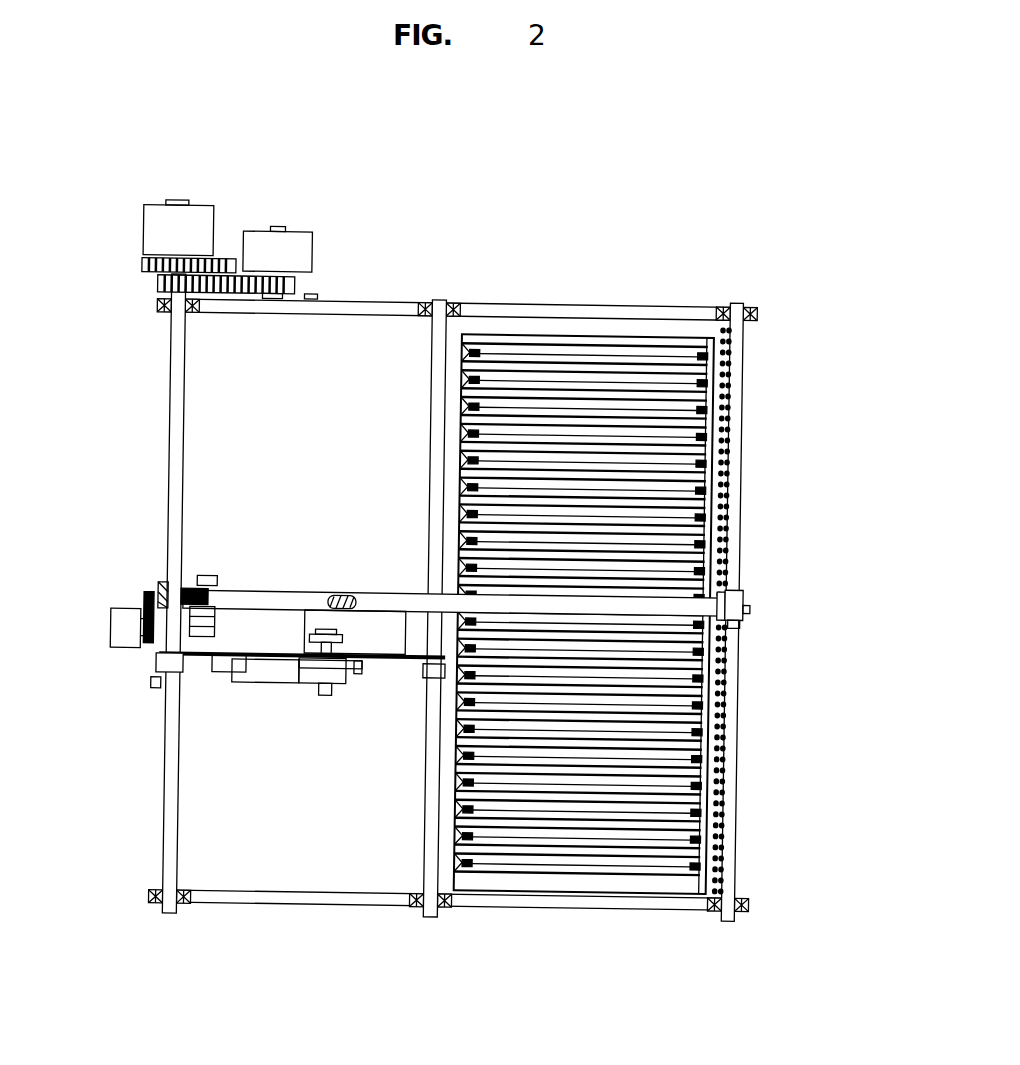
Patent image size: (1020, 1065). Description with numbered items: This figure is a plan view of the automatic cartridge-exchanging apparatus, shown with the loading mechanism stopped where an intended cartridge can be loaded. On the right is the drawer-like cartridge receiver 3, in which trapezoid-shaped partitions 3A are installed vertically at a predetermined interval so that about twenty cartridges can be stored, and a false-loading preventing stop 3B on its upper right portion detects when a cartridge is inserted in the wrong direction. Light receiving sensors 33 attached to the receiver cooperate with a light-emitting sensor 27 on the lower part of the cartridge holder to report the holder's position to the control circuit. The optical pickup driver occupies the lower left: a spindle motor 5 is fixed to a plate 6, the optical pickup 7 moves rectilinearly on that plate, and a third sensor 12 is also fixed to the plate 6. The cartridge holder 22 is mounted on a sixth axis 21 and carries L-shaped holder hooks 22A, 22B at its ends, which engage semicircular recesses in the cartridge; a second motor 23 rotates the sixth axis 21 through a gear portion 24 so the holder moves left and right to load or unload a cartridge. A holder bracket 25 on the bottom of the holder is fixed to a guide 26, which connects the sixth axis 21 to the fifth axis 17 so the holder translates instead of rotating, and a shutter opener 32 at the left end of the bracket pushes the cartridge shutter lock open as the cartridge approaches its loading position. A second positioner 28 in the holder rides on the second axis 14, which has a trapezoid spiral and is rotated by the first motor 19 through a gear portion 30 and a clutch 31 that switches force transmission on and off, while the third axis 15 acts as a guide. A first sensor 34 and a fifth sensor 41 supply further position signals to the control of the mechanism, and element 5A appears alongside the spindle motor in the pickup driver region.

The cartridge receiver 3 is at (643, 558).
The partitions 3A is at (683, 421).
The false-loading preventing stop 3B is at (705, 357).
The spindle motor 5 is at (325, 685).
The slide knob 5A is at (318, 632).
The plate 6 is at (410, 656).
The optical pickup 7 is at (275, 685).
The third sensor 12 is at (214, 643).
The second axis 14 is at (166, 840).
The third axis 15 is at (432, 774).
The fifth axis 17 is at (742, 816).
The first motor 19 is at (292, 252).
The sixth axis 21 is at (752, 605).
The cartridge holder 22 is at (377, 597).
The holder hook 22A is at (347, 597).
The holder hook 22B is at (214, 662).
The second motor 23 is at (115, 625).
The gear portion 24 is at (160, 594).
The holder bracket 25 is at (710, 595).
The guide 26 is at (743, 600).
The light-emitting sensor 27 is at (735, 617).
The second positioner 28 is at (207, 582).
The gear portion 30 is at (155, 288).
The clutch 31 is at (140, 236).
The shutter opener 32 is at (183, 635).
The light receiving sensors 33 is at (722, 727).
The first sensor 34 is at (185, 597).
The fifth sensor 41 is at (158, 689).